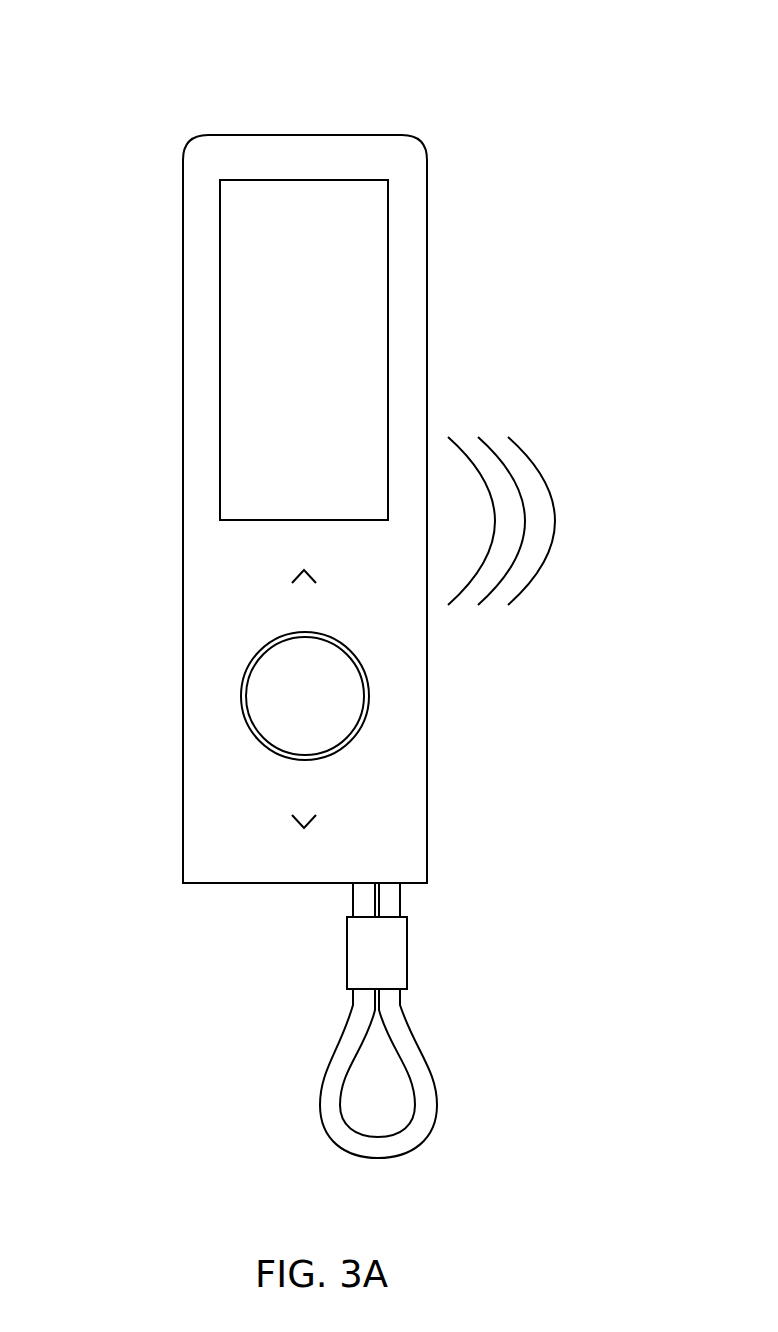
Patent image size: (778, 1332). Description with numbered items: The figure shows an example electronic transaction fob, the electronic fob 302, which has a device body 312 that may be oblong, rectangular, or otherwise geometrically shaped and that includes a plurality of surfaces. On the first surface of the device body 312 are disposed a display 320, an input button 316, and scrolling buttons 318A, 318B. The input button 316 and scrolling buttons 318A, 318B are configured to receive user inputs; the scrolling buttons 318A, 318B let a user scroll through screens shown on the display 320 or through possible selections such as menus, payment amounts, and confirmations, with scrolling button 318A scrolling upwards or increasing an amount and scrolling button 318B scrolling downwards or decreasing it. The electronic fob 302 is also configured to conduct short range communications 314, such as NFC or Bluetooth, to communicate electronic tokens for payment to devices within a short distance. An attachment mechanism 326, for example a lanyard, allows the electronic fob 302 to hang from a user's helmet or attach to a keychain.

The electronic fob 302 is at (128, 72).
The device body 312 is at (205, 167).
The display 320 is at (365, 262).
The scrolling button 318A is at (245, 580).
The input button 316 is at (241, 697).
The scrolling button 318B is at (245, 817).
The short range communications 314 is at (555, 540).
The attachment mechanism 326 is at (330, 1105).